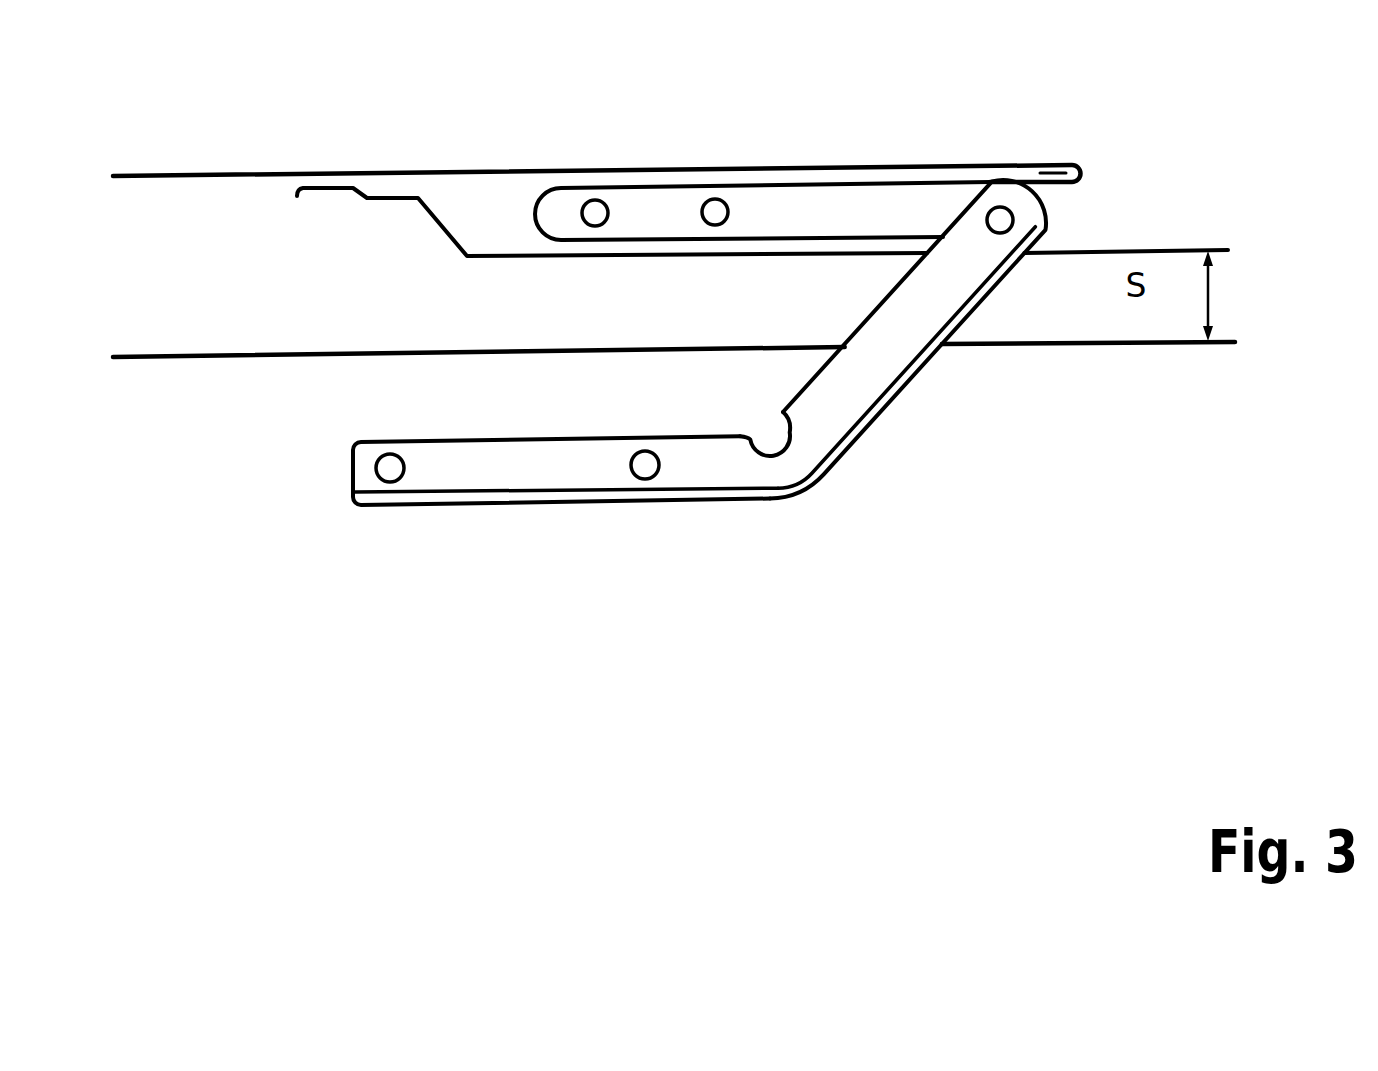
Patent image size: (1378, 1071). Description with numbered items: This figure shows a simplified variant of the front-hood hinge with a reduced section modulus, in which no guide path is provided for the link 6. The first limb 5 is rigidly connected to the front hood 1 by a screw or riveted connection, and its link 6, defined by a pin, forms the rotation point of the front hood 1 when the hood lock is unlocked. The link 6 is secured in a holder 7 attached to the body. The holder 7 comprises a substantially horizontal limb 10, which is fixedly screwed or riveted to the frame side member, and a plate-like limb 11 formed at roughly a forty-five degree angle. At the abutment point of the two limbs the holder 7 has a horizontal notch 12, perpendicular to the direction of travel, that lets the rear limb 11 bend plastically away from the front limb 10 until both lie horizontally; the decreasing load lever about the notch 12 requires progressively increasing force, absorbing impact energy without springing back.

The front hood 1 is at (191, 180).
The first limb 5 is at (633, 205).
The link 6 is at (1012, 216).
The holder 7 is at (772, 473).
The horizontal limb 10 is at (508, 463).
The limb 11 is at (862, 362).
The notch 12 is at (776, 432).